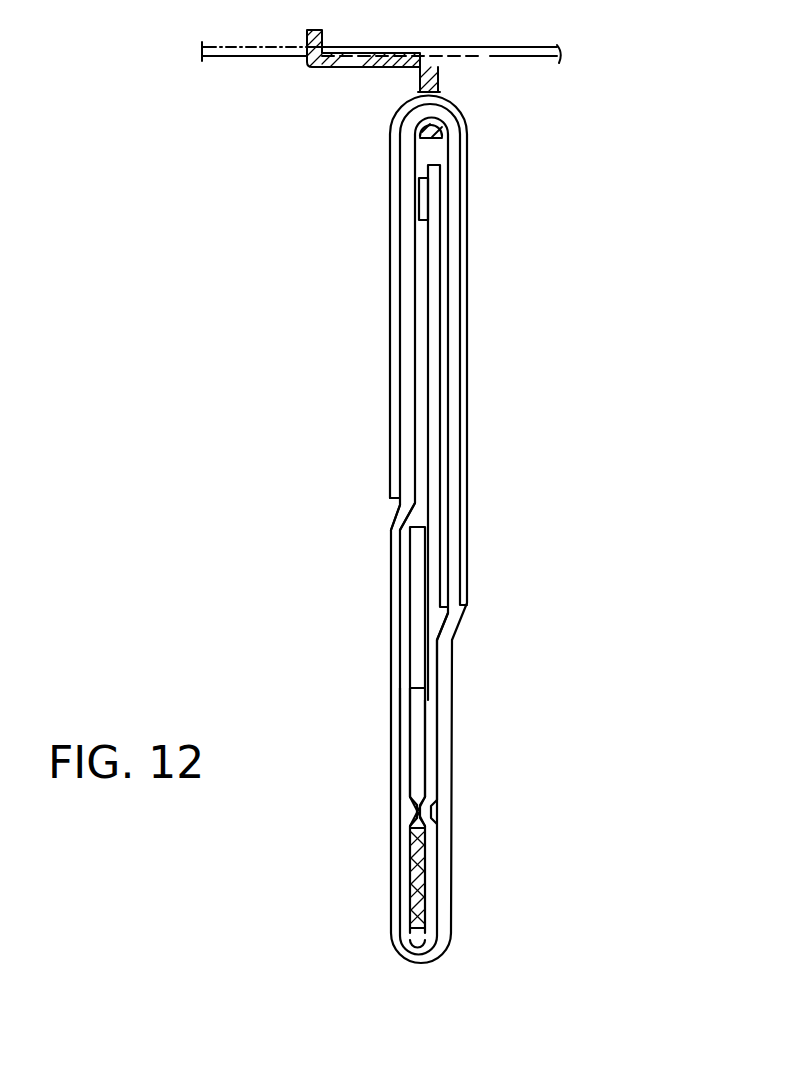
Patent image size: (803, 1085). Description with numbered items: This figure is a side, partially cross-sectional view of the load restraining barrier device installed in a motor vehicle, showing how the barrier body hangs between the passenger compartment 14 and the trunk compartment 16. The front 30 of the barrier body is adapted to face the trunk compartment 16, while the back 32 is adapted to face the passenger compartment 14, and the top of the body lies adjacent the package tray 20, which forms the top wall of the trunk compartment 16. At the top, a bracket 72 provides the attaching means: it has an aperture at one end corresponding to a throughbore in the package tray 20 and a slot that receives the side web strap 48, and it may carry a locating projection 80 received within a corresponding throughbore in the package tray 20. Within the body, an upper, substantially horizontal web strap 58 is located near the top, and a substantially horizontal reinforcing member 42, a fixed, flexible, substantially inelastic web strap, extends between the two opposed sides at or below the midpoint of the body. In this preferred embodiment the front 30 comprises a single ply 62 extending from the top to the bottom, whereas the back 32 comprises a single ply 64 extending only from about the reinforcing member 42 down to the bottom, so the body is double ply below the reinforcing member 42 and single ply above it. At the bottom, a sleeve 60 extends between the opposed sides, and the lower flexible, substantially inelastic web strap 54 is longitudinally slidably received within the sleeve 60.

The passenger compartment 14 is at (297, 398).
The trunk compartment 16 is at (567, 378).
The package tray 20 is at (500, 43).
The front 30 is at (470, 332).
The back 32 is at (388, 328).
The horizontal reinforcing member 42 is at (410, 593).
The web strap 48 is at (448, 410).
The web strap 54 is at (415, 878).
The upper horizontal web strap 58 is at (420, 192).
The sleeve 60 is at (417, 827).
The single ply 62 is at (430, 672).
The single ply 64 is at (405, 680).
The bracket 72 is at (445, 70).
The locating projection 80 is at (322, 30).